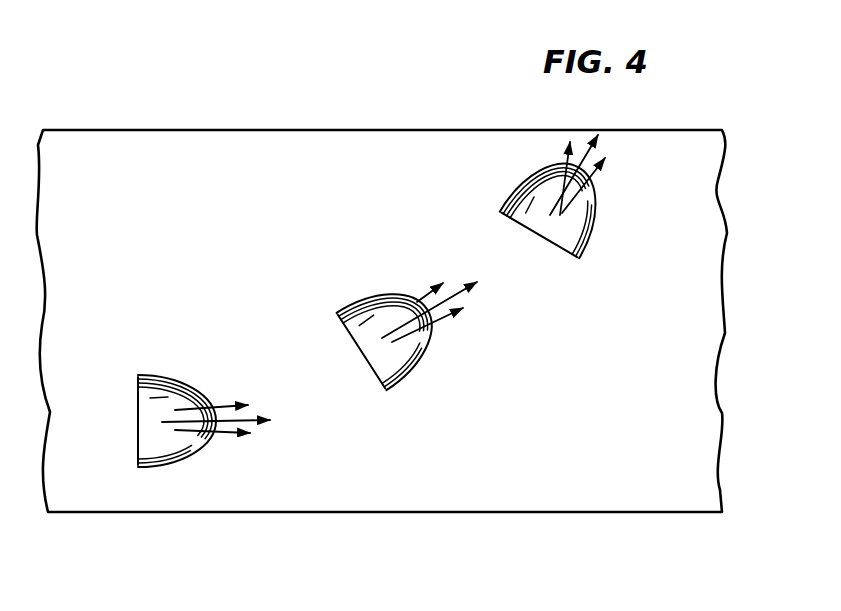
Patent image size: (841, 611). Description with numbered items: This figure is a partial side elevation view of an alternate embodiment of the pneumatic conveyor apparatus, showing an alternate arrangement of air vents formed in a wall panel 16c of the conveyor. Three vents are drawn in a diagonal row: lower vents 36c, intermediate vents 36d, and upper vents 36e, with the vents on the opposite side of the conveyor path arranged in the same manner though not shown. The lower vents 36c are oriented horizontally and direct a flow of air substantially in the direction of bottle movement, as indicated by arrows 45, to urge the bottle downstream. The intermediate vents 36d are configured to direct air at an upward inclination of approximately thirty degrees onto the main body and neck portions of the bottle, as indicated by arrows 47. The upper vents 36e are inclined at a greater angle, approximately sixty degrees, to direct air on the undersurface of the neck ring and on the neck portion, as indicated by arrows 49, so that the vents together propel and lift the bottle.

The sheet layer 16c is at (246, 241).
The lower vents 36c is at (148, 417).
The intermediate vents 36d is at (375, 353).
The upper vents 36e is at (552, 233).
The arrows 45 is at (223, 403).
The arrows 47 is at (422, 300).
The arrows 49 is at (600, 175).